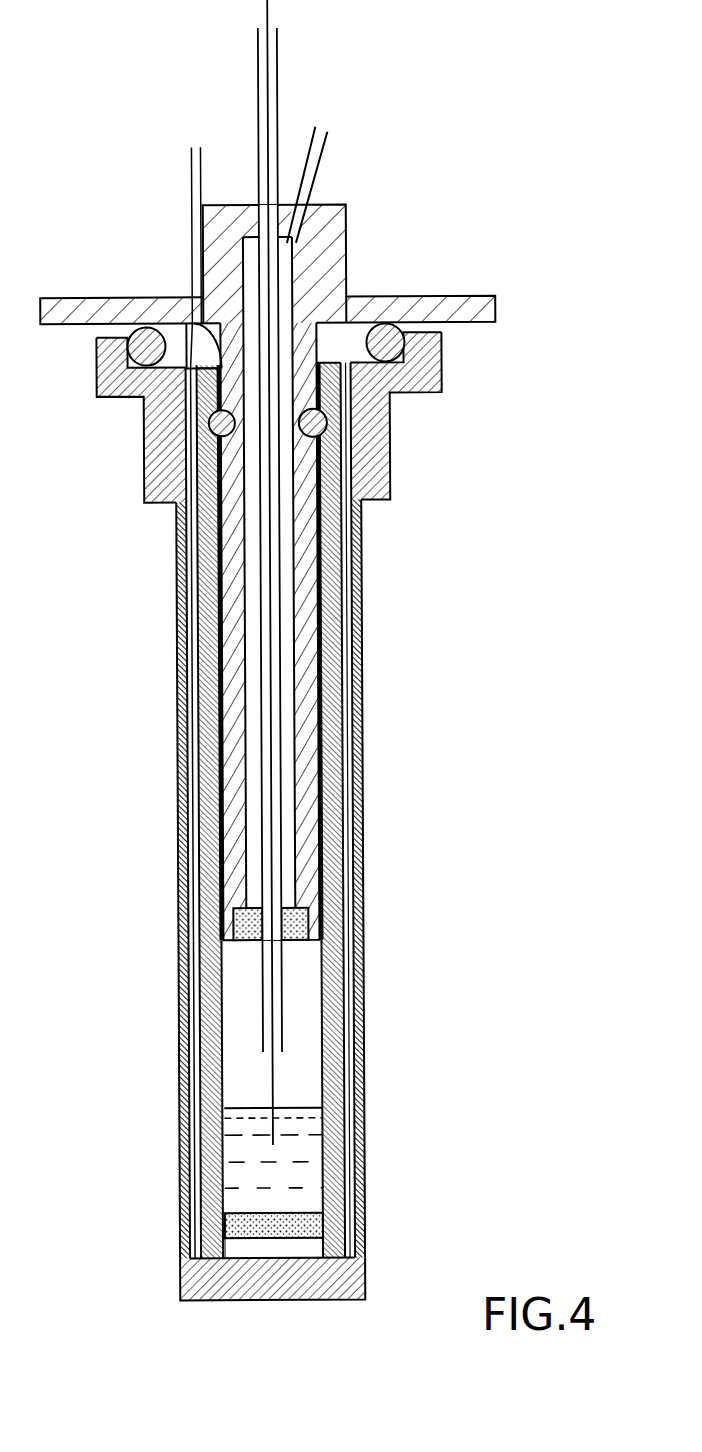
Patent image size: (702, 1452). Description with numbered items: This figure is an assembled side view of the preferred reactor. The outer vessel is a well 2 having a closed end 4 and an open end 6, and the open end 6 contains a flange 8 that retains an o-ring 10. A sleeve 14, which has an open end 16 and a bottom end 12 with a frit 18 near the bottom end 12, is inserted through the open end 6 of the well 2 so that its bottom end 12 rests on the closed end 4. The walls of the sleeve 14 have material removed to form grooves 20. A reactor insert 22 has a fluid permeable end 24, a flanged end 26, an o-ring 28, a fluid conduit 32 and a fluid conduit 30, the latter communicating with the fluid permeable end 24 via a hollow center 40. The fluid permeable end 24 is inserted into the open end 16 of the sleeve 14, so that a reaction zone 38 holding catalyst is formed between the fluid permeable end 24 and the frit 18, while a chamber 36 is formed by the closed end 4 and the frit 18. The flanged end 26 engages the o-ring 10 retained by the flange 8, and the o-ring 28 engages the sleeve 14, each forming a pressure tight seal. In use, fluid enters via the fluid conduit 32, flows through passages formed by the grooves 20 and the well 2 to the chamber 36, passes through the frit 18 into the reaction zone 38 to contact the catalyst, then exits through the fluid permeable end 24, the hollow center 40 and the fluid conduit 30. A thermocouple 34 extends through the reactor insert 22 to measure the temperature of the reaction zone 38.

The well 2 is at (367, 1010).
The closed end 4 is at (355, 1290).
The open end 6 is at (190, 327).
The flange 8 is at (440, 376).
The o-ring 10 is at (398, 333).
The bottom end 12 is at (233, 1252).
The sleeve 14 is at (337, 850).
The open end 16 is at (221, 362).
The frit 18 is at (312, 1227).
The grooves 20 is at (348, 637).
The reactor insert 22 is at (308, 545).
The fluid permeable end 24 is at (300, 921).
The flanged end 26 is at (497, 303).
The o-ring 28 is at (328, 420).
The fluid conduit 30 is at (330, 136).
The fluid conduit 32 is at (194, 150).
The thermocouple 34 is at (271, 13).
The chamber 36 is at (273, 1255).
The reaction zone 38 is at (307, 1166).
The hollow center 40 is at (285, 285).